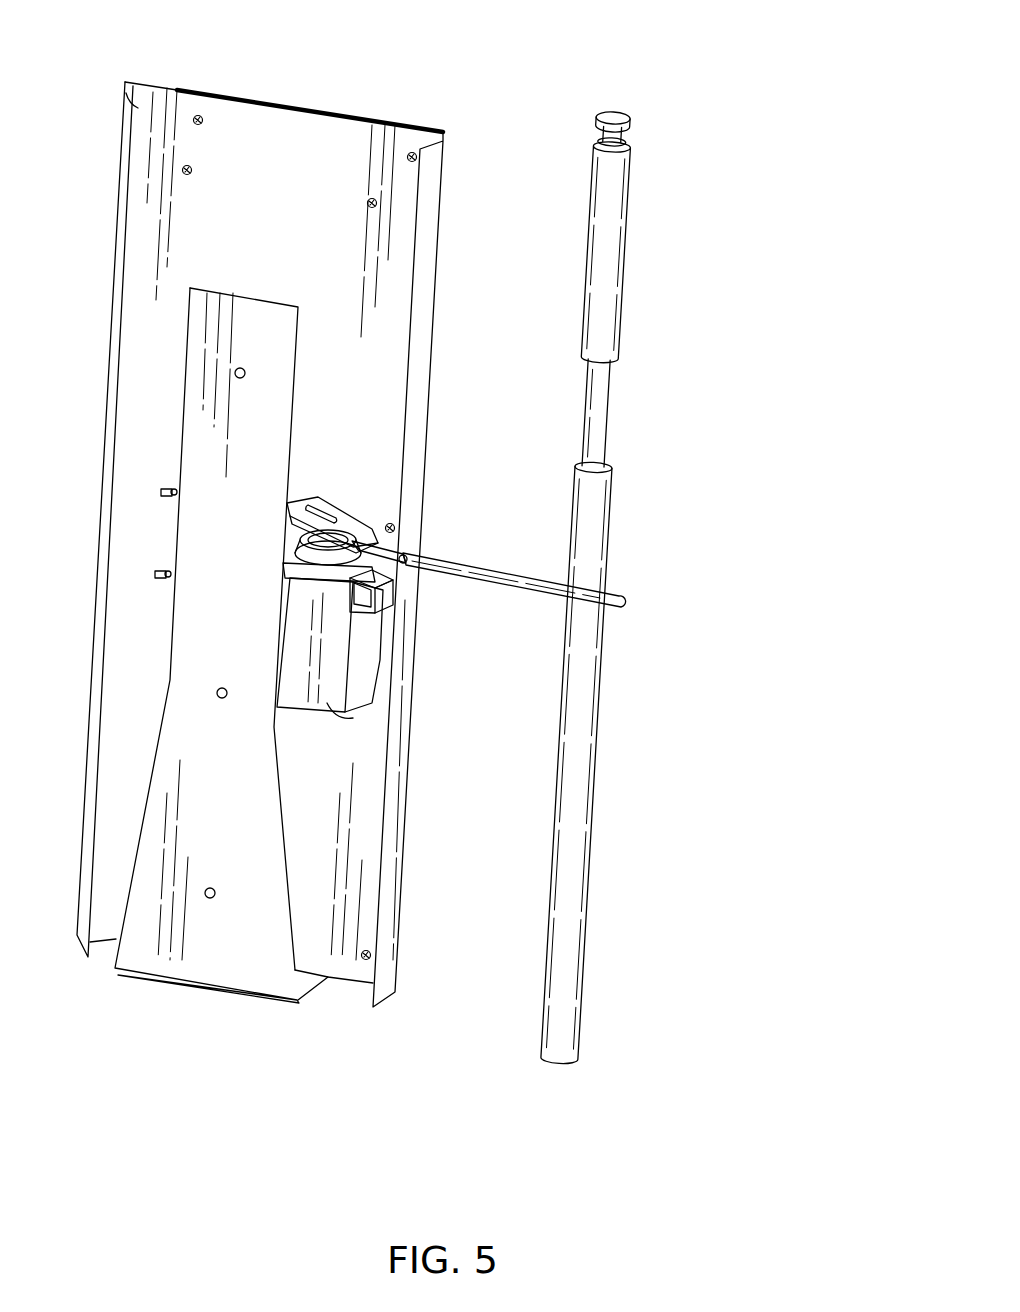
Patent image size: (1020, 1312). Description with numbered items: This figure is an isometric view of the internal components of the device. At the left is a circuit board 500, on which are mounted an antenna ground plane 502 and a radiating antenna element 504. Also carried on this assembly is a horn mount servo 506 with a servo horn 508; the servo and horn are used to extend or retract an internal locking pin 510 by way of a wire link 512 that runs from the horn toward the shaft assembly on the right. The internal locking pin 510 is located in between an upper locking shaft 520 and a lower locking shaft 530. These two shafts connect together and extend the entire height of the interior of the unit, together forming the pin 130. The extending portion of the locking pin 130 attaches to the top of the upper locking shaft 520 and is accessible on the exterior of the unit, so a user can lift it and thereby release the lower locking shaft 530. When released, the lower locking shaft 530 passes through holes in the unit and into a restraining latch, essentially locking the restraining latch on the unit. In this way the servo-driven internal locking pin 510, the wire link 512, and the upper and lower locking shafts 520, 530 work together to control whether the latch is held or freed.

The circuit board 500 is at (353, 118).
The antenna ground plane 502 is at (428, 192).
The radiating antenna element 504 is at (240, 997).
The horn mount servo 506 is at (347, 707).
The servo horn 508 is at (368, 523).
The internal locking pin 510 is at (525, 582).
The wire link 512 is at (400, 556).
The locking pin 130 is at (628, 117).
The upper locking shaft 520 is at (617, 176).
The lower locking shaft 530 is at (583, 735).